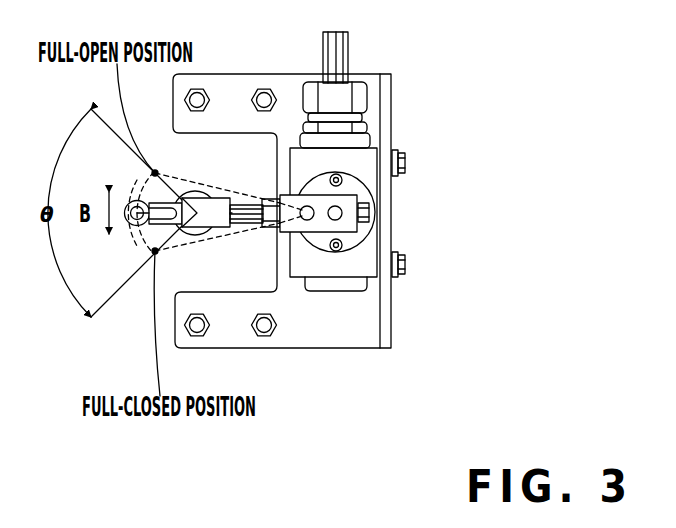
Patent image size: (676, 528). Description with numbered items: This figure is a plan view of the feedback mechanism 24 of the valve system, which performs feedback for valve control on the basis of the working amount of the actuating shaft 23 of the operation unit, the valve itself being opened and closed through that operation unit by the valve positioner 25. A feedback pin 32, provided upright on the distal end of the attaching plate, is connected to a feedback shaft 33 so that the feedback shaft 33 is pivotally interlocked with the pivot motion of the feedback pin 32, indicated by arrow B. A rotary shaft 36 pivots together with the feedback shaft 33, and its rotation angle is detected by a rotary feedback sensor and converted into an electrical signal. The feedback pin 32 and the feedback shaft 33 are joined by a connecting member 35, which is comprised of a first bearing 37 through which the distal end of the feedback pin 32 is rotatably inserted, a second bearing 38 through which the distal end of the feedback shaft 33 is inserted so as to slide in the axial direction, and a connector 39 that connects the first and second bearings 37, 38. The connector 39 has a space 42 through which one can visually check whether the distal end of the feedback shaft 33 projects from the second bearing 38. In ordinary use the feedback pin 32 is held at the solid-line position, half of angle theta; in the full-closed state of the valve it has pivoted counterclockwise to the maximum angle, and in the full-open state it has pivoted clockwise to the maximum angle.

The actuating shaft 23 is at (207, 229).
The feedback mechanism 24 is at (135, 338).
The valve positioner 25 is at (372, 170).
The feedback pin 32 is at (128, 226).
The feedback shaft 33 is at (244, 203).
The connecting member 35 is at (224, 234).
The rotary shaft 36 is at (342, 220).
The first bearing 37 is at (128, 200).
The second bearing 38 is at (221, 197).
The connector 39 is at (163, 231).
The space 42 is at (164, 211).